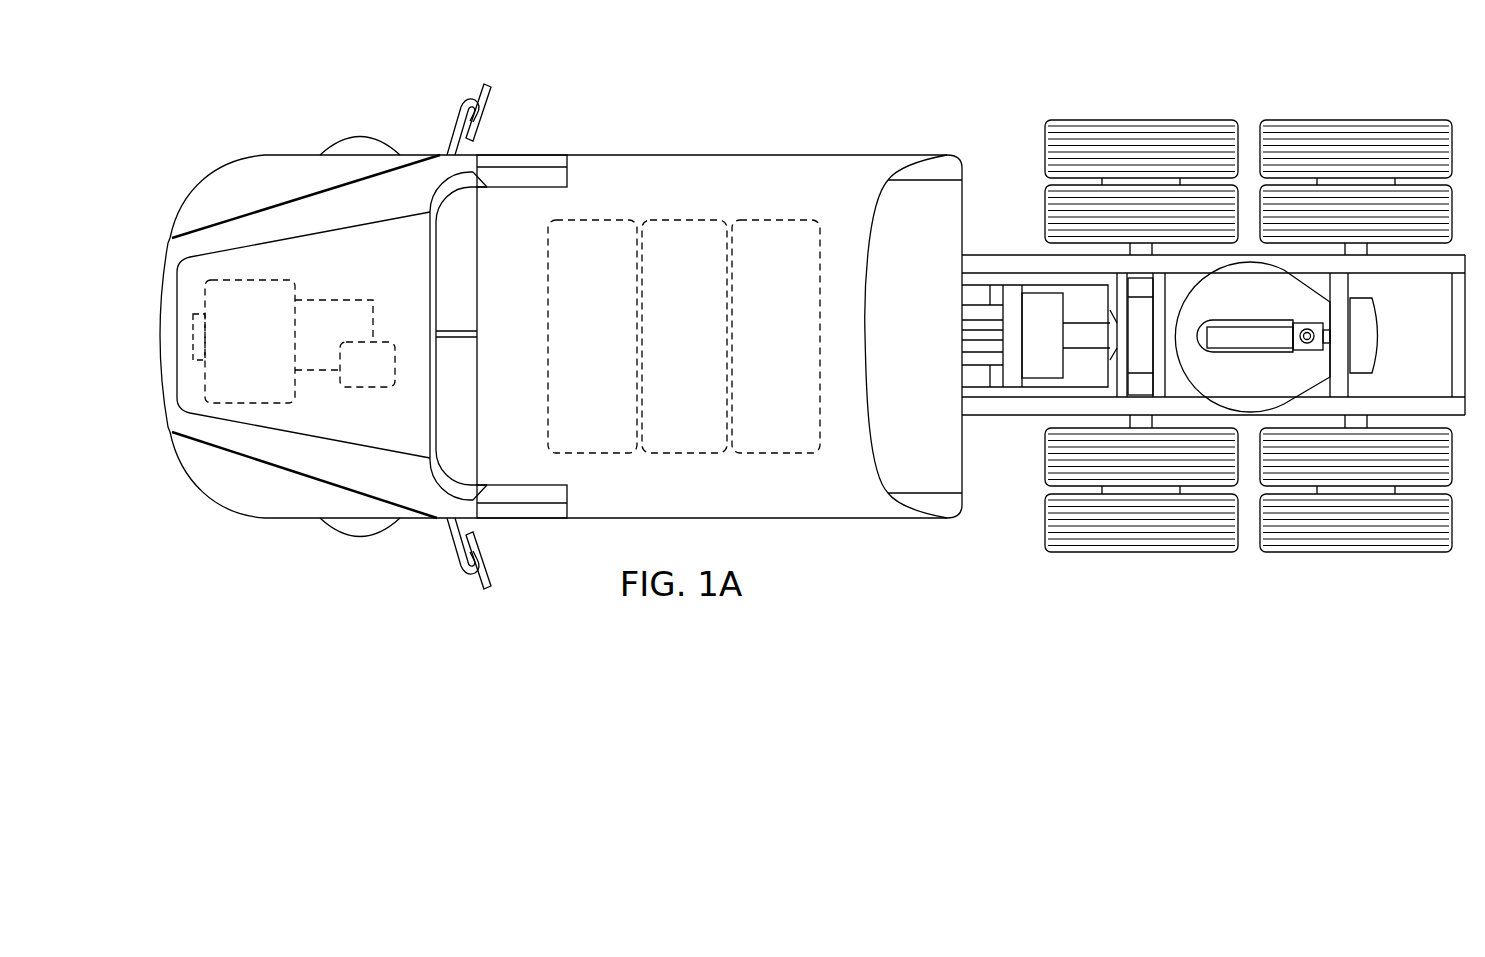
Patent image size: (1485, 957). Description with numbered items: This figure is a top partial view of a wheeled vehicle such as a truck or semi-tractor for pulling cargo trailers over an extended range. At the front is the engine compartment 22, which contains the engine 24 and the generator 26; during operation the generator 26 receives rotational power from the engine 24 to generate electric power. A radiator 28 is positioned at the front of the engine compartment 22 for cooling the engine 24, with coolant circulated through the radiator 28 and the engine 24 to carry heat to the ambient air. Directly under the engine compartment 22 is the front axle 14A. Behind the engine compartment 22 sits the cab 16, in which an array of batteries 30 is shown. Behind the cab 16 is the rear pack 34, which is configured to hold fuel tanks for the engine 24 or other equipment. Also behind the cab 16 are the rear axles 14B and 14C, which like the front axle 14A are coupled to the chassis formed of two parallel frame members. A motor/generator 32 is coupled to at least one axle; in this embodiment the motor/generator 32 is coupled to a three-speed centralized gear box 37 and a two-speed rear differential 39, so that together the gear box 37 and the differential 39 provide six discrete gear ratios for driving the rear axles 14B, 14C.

The front axle 14A is at (360, 136).
The rear axle 14B is at (1140, 120).
The rear axle 14C is at (1355, 120).
The cab 16 is at (482, 69).
The engine compartment 22 is at (193, 69).
The engine 24 is at (205, 367).
The generator 26 is at (367, 388).
The radiator 28 is at (192, 328).
The array of batteries 30 is at (818, 208).
The motor/generator 32 is at (1043, 305).
The rear pack 34 is at (950, 458).
The three-speed centralized gear box 37 is at (1145, 353).
The two-speed rear differential 39 is at (1360, 348).